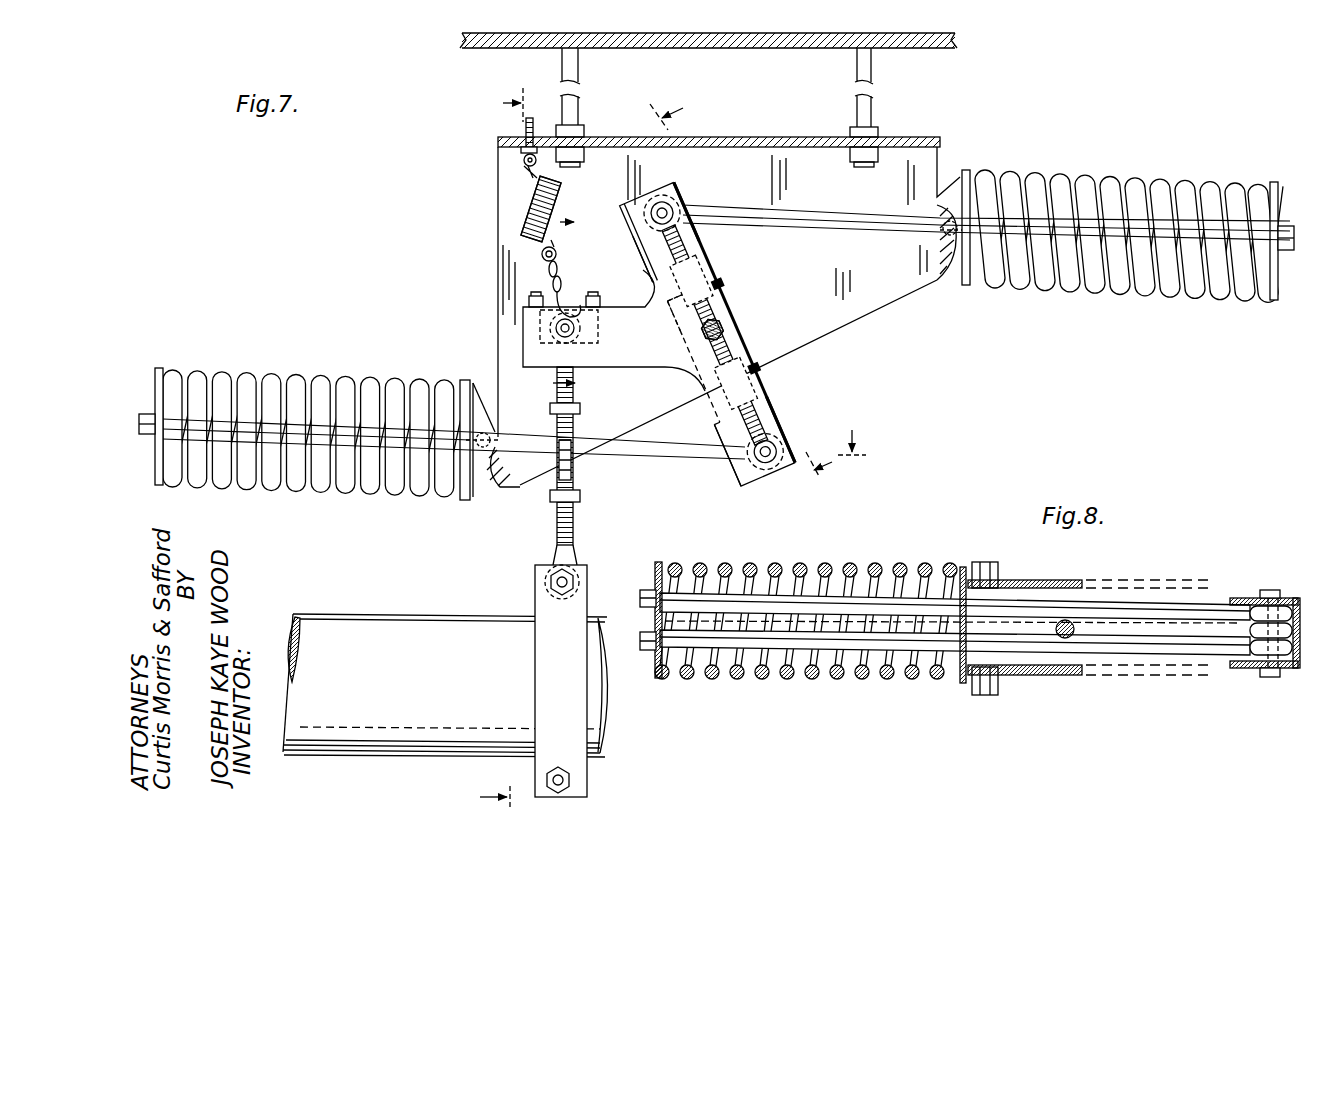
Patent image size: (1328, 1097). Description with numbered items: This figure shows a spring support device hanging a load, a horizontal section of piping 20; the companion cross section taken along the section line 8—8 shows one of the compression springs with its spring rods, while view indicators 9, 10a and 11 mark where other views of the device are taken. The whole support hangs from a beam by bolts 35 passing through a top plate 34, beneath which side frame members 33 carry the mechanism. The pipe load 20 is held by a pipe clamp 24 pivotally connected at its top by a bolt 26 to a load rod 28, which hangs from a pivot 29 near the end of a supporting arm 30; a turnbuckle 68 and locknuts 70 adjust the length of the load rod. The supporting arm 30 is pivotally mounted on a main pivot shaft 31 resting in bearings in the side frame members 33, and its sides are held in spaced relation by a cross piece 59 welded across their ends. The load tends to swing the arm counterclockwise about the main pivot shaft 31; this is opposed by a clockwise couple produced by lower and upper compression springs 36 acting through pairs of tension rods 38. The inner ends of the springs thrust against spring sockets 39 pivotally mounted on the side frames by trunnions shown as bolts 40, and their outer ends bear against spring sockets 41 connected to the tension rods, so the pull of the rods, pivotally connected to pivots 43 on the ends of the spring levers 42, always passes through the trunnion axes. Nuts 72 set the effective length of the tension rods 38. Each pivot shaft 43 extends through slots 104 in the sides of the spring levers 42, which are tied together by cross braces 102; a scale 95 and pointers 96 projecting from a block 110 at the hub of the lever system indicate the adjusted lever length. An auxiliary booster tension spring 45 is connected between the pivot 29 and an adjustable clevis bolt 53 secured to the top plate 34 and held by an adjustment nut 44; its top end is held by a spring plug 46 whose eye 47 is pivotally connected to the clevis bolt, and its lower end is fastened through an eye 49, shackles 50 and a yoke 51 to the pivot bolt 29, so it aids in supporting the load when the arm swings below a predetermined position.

In FIG. 7, the section line 8— 8 is at (852, 455).
In FIG. 7, the view indicator 9 is at (510, 449).
In FIG. 7, the view indicator 10a is at (587, 304).
In FIG. 7, the section line 11— 11 is at (741, 289).
In FIG. 7, the pipe load 20 is at (347, 608).
In FIG. 7, the pipe clamp 24 is at (550, 595).
In FIG. 7, the bolt 26 is at (572, 573).
In FIG. 7, the load rod 28 is at (575, 516).
In FIG. 8, the load rod 28 is at (1066, 640).
In FIG. 7, the pivot 29 is at (593, 296).
In FIG. 7, the supporting arm 30 is at (620, 360).
In FIG. 7, the main pivot shaft 31 is at (728, 330).
In FIG. 7, the side frame members 33 is at (862, 302).
In FIG. 8, the side frame members 33 is at (1040, 580).
In FIG. 7, the top plate 34 is at (726, 137).
In FIG. 7, the bolts 35 is at (578, 77).
In FIG. 7, the compression springs 36 is at (272, 372).
In FIG. 8, the compression springs 36 is at (800, 562).
In FIG. 7, the tension rods 38 is at (800, 216).
In FIG. 8, the tension rods 38 is at (852, 598).
In FIG. 7, the spring sockets 39 is at (462, 500).
In FIG. 8, the spring sockets 39 is at (966, 566).
In FIG. 7, the trunnions 40 is at (490, 438).
In FIG. 8, the trunnions 40 is at (986, 562).
In FIG. 7, the spring sockets 41 is at (160, 368).
In FIG. 8, the spring sockets 41 is at (660, 560).
In FIG. 7, the spring levers 42 is at (704, 238).
In FIG. 8, the spring levers 42 is at (1240, 598).
In FIG. 7, the pivots 43 is at (672, 204).
In FIG. 8, the pivots 43 is at (1274, 590).
In FIG. 7, the adjustment nut 44 is at (521, 144).
In FIG. 7, the auxiliary booster tension spring 45 is at (545, 212).
In FIG. 7, the spring plug 46 is at (522, 189).
In FIG. 7, the eye 47 is at (523, 160).
In FIG. 7, the eye 49 is at (542, 254).
In FIG. 7, the shackles 50 is at (561, 275).
In FIG. 7, the yoke 51 is at (556, 296).
In FIG. 7, the adjustable clevis bolt 53 is at (525, 122).
In FIG. 7, the cross piece 59 is at (497, 296).
In FIG. 7, the turnbuckle 68 is at (574, 470).
In FIG. 8, the turnbuckle 68 is at (1068, 618).
In FIG. 7, the locknuts 70 is at (552, 404).
In FIG. 7, the nuts 72 is at (146, 412).
In FIG. 8, the nuts 72 is at (648, 650).
In FIG. 7, the scale 95 is at (735, 314).
In FIG. 7, the pointers 96 is at (726, 284).
In FIG. 7, the cross braces 102 is at (615, 206).
In FIG. 7, the slots 104 is at (650, 282).
In FIG. 7, the hub block 110 is at (676, 328).